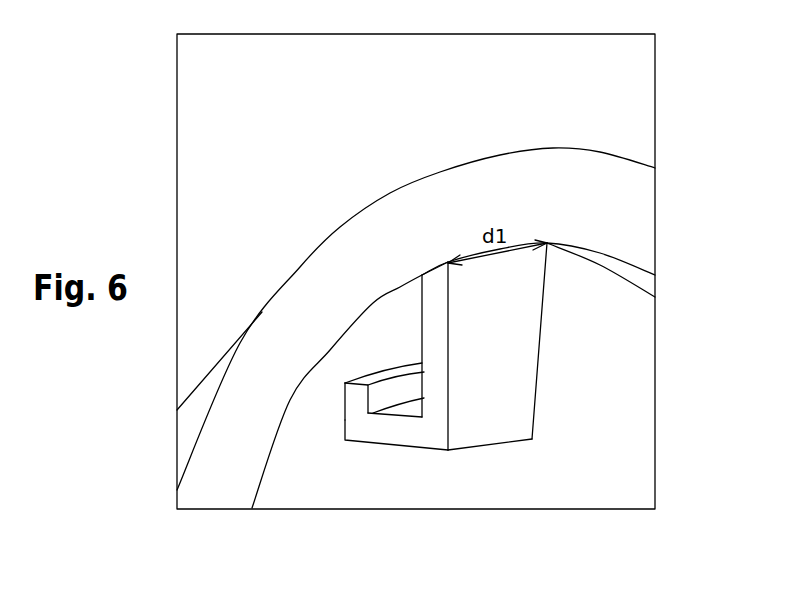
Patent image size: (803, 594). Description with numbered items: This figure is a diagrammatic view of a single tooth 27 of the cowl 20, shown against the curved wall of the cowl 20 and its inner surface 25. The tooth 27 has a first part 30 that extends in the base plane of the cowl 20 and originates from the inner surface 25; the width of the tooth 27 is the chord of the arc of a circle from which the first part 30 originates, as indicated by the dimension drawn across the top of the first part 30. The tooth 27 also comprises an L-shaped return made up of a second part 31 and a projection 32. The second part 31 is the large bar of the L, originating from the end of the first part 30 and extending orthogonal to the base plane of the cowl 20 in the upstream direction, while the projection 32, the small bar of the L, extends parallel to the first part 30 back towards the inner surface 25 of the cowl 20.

The cowl 20 is at (657, 430).
The inner surface 25 is at (600, 370).
The tooth 27 is at (508, 323).
The first part 30 is at (490, 403).
The second part 31 is at (397, 432).
The projection 32 is at (357, 408).